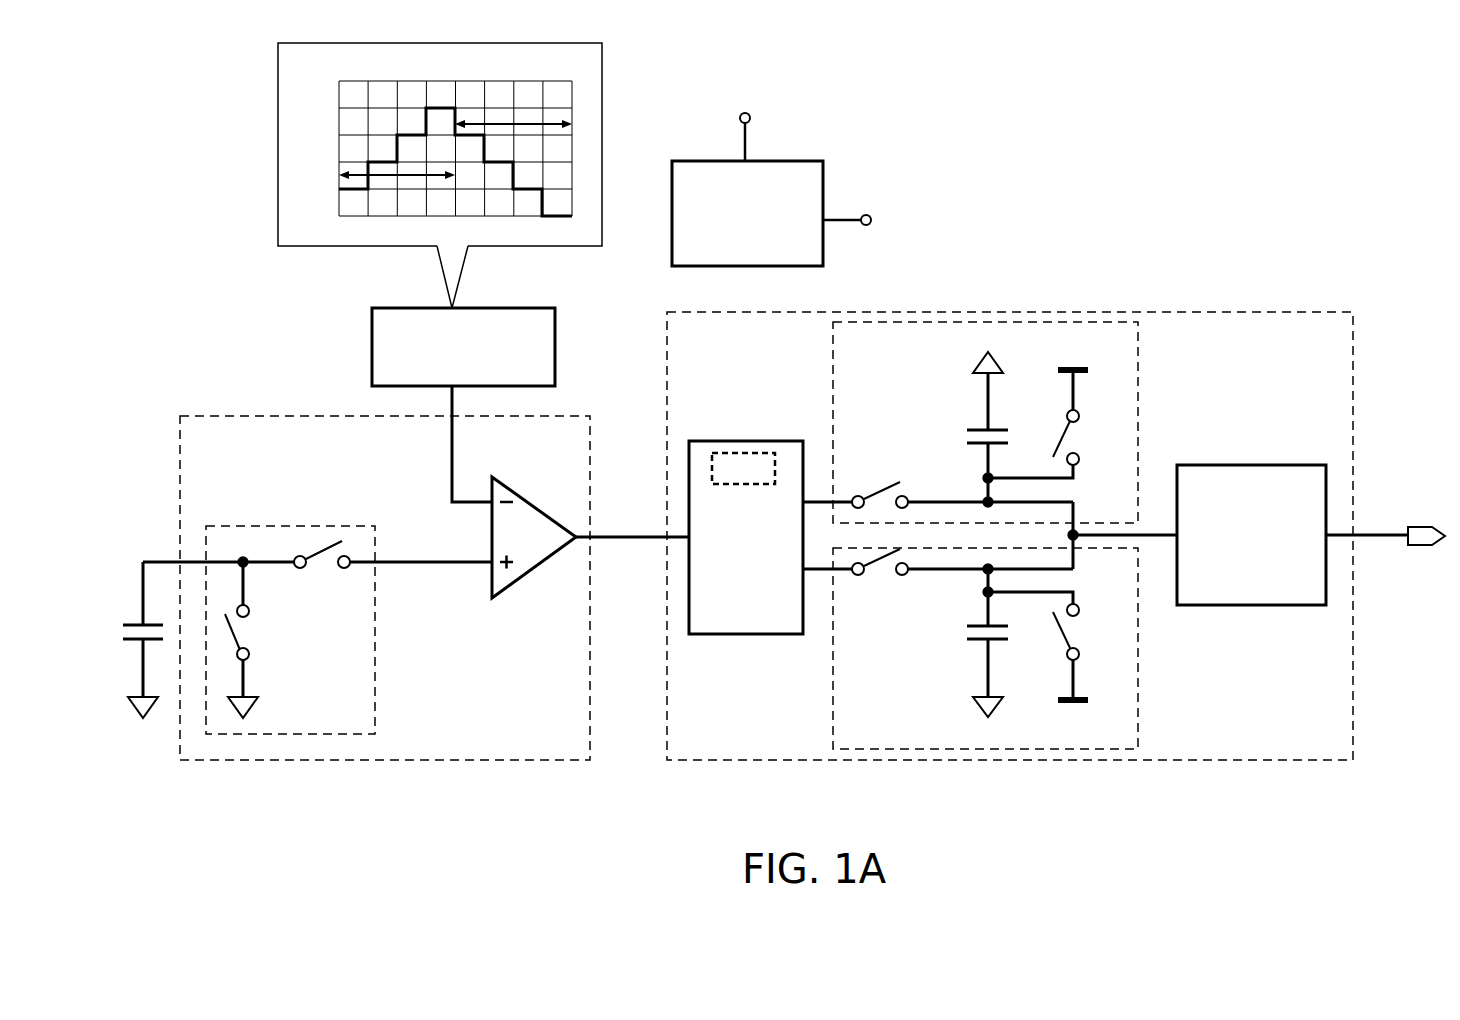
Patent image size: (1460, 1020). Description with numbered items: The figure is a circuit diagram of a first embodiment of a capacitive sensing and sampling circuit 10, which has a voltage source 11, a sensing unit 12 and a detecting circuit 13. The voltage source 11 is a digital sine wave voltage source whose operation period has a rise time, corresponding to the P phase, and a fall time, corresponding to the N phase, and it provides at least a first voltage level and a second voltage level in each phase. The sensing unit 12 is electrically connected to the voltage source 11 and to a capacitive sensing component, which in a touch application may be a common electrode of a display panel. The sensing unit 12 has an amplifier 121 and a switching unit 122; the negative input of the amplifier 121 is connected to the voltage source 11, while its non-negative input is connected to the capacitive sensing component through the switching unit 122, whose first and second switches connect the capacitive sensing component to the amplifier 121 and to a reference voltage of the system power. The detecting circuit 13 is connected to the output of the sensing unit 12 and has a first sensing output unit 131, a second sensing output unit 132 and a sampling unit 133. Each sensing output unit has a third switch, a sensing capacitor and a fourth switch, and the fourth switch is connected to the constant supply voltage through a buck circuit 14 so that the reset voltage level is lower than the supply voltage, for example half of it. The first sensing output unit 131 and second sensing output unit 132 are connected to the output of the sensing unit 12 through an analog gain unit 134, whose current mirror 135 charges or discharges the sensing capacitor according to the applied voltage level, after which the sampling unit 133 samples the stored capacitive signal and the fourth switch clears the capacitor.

The capacitive sensing and sampling circuit 10 is at (1312, 192).
The voltage source 11 is at (372, 357).
The sensing unit 12 is at (228, 416).
The detecting circuit 13 is at (1220, 312).
The buck circuit 14 is at (823, 180).
The amplifier 121 is at (533, 573).
The switching unit 122 is at (273, 526).
The first sensing output unit 131 is at (1031, 322).
The second sensing output unit 132 is at (1055, 749).
The sampling unit 133 is at (1250, 465).
The analog gain unit 134 is at (745, 637).
The current mirror 135 is at (742, 447).